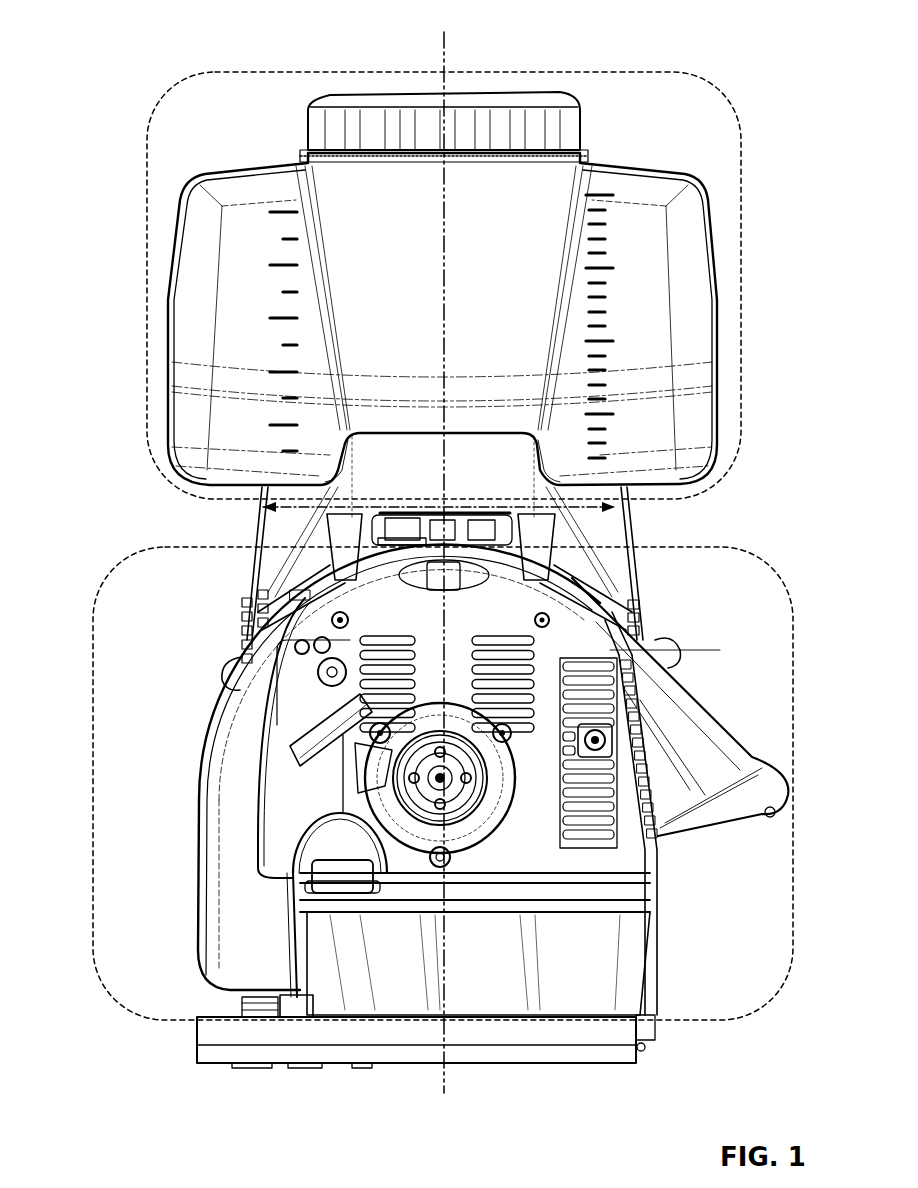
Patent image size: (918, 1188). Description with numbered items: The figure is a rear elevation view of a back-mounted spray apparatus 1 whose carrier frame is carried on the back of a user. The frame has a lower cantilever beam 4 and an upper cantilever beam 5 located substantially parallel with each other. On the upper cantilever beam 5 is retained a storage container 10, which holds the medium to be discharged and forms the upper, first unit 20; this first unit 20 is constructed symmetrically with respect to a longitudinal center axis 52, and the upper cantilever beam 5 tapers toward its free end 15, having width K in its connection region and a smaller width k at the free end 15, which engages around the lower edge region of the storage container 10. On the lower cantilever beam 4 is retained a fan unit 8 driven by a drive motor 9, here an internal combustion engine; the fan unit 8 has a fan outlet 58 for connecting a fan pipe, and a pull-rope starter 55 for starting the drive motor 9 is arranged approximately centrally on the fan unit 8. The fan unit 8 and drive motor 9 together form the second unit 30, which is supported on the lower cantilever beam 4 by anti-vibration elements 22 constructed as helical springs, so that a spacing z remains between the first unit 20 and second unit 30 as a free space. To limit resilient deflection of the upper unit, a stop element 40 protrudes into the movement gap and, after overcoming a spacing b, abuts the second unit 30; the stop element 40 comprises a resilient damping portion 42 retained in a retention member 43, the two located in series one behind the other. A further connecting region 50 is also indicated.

The spray apparatus 1 is at (166, 162).
The lower cantilever beam 4 is at (598, 1040).
The upper cantilever beam 5 is at (598, 506).
The fan unit 8 is at (565, 610).
The drive motor 9 is at (513, 850).
The storage container 10 is at (488, 312).
The free end 15 is at (535, 445).
The first unit 20 is at (148, 418).
The anti-vibration element 22 is at (234, 1001).
The second unit 30 is at (116, 560).
The stop element 40 is at (296, 554).
The resilient damping portion 42 is at (290, 572).
The retention member 43 is at (337, 525).
The connecting point 50 is at (405, 512).
The longitudinal center axis 52 is at (445, 33).
The pull-rope starter 55 is at (383, 798).
The fan outlet 58 is at (745, 793).